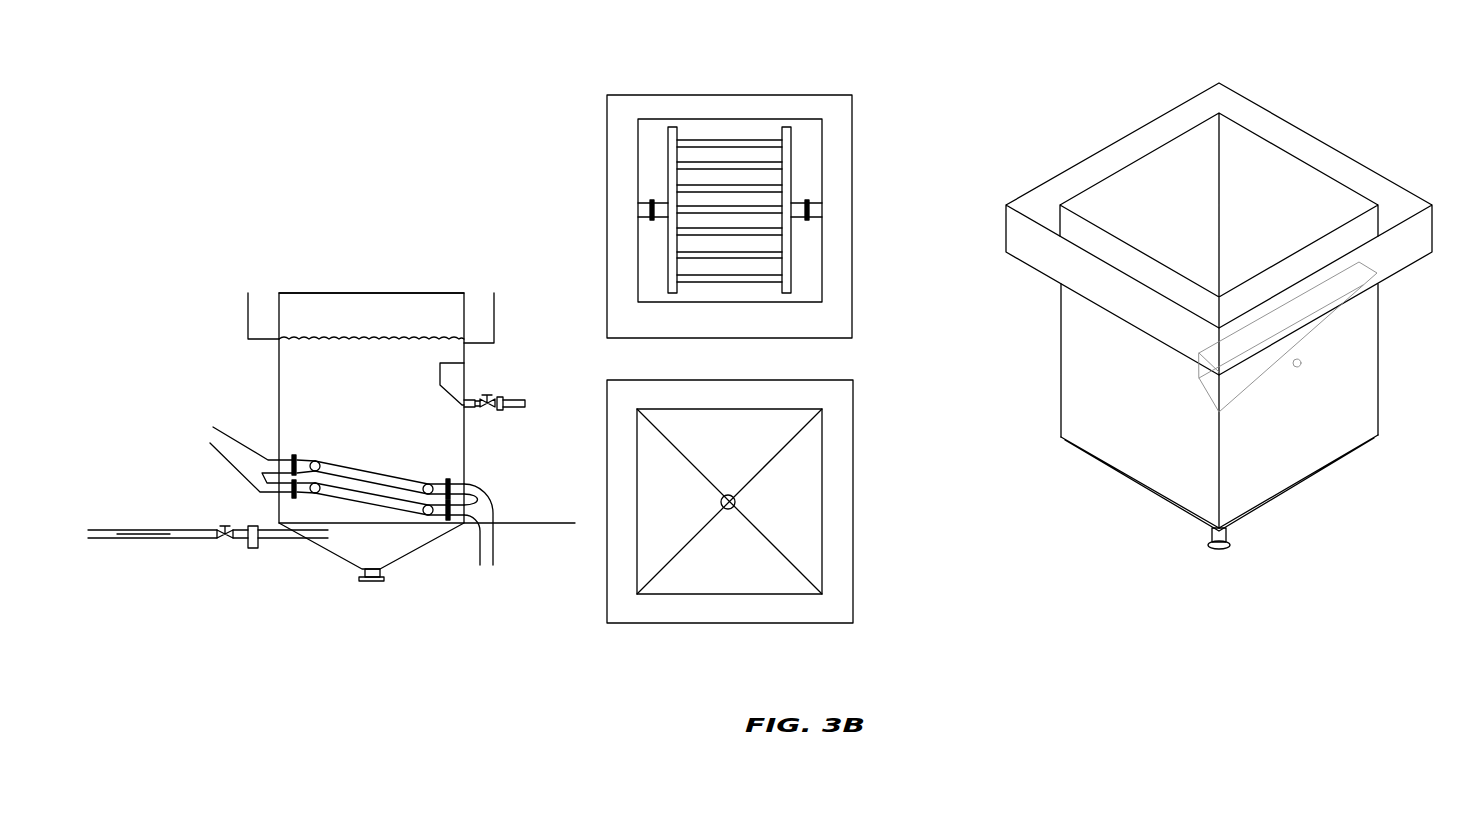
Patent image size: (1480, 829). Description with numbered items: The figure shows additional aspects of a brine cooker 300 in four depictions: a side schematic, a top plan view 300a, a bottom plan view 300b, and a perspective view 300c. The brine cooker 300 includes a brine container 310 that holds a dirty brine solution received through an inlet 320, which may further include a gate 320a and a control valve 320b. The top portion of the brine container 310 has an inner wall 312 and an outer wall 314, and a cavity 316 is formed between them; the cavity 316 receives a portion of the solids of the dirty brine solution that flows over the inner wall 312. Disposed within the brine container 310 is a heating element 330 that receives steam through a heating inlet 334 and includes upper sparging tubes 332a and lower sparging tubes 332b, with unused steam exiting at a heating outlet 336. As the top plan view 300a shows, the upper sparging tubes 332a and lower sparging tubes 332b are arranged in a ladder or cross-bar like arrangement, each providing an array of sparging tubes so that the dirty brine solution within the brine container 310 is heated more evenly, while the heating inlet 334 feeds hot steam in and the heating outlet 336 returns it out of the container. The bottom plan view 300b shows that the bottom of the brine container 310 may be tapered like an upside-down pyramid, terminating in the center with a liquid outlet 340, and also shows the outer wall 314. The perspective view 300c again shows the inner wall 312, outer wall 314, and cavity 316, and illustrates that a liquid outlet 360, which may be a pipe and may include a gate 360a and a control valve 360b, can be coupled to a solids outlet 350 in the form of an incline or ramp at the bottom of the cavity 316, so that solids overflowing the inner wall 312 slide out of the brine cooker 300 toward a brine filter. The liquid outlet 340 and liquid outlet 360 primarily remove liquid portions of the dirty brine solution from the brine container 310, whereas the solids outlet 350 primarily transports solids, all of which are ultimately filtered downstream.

The brine cooker 300 is at (303, 148).
The top plan view 300a is at (665, 58).
The bottom plan view 300b is at (780, 619).
The perspective view 300c is at (1118, 102).
The brine container 310 is at (279, 400).
The inner wall 312 is at (279, 312).
The outer wall 314 is at (248, 310).
The cavity 316 is at (468, 337).
The inlet 320 is at (262, 545).
The gate 320a is at (218, 530).
The control valve 320b is at (247, 545).
The heating element 330 is at (340, 498).
The upper sparging tubes 332a is at (397, 473).
The lower sparging tubes 332b is at (373, 502).
The heating inlet 334 is at (230, 452).
The heating outlet 336 is at (487, 505).
The liquid outlet 340 is at (378, 581).
The solids outlet 350 is at (460, 376).
The liquid outlet 360 is at (510, 408).
The gate 360a is at (492, 410).
The control valve 360b is at (498, 399).